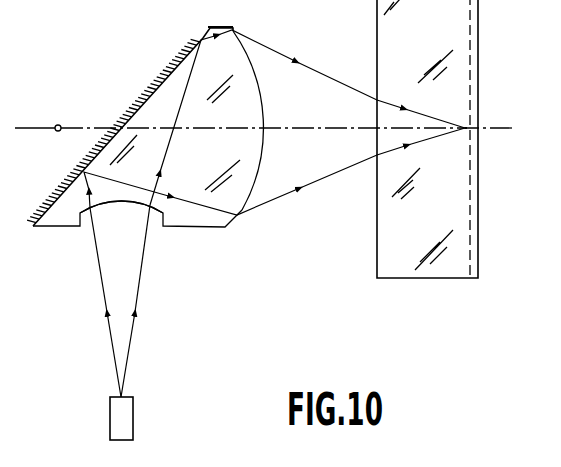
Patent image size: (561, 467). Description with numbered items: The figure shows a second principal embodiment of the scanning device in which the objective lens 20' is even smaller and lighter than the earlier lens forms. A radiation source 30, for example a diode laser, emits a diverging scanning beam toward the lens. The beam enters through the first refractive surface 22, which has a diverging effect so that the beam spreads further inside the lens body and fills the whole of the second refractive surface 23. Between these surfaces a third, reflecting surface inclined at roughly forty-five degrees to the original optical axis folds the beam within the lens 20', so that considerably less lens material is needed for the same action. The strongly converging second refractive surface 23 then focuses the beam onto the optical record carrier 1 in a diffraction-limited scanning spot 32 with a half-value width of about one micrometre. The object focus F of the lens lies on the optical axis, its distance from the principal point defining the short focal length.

The optical record carrier 1 is at (361, 29).
The objective lens 20' is at (134, 127).
The first refractive surface 22 is at (88, 218).
The second refractive surface 23 is at (250, 208).
The radiation source 30 is at (133, 418).
The scanning spot 32 is at (467, 126).
The object focus F is at (58, 125).